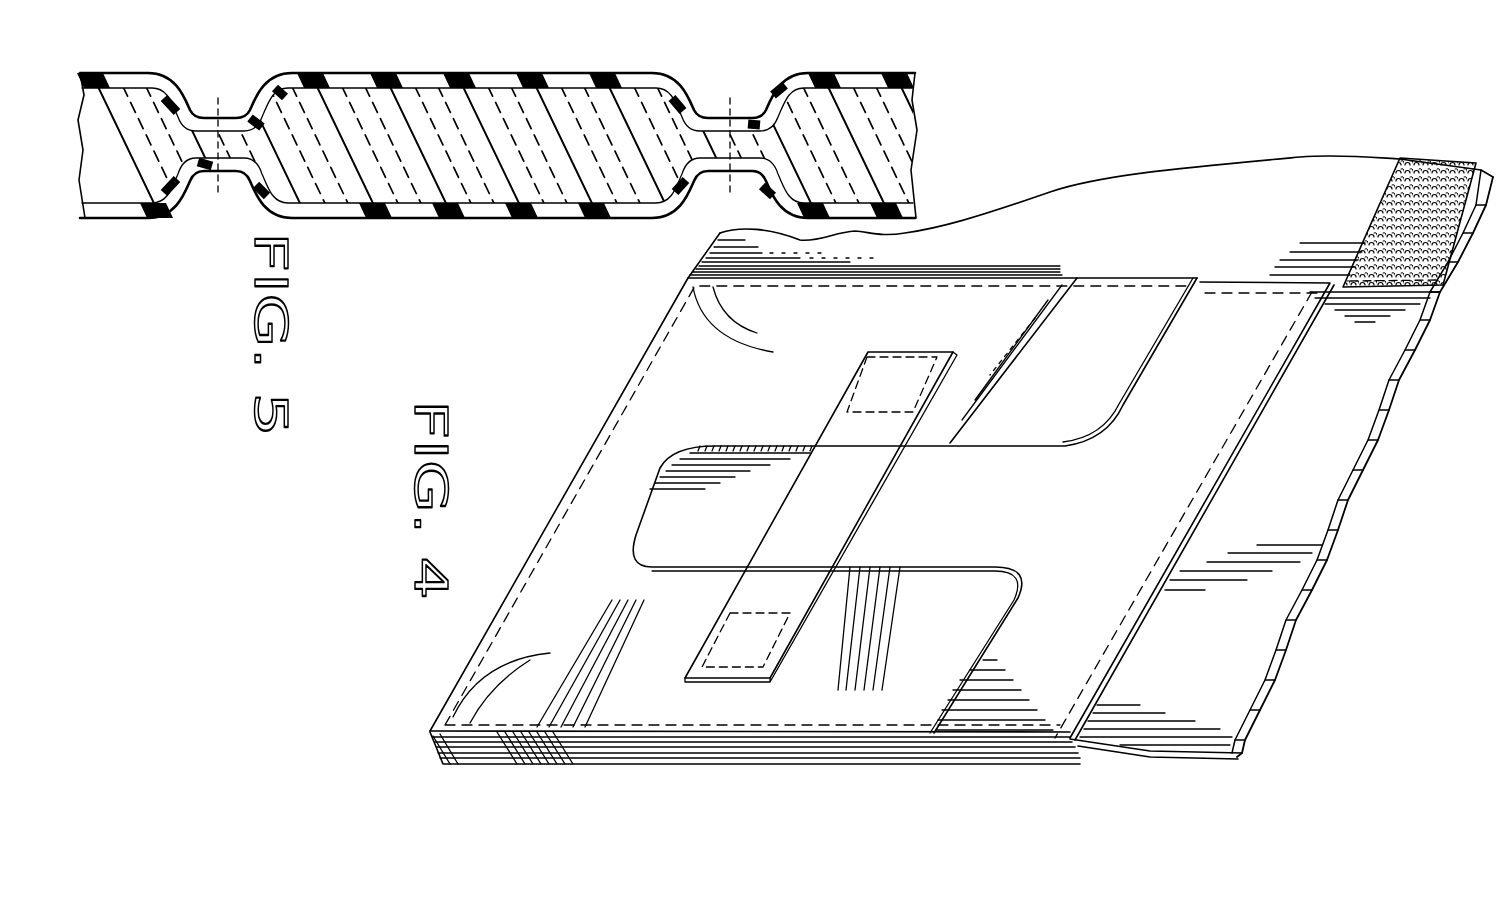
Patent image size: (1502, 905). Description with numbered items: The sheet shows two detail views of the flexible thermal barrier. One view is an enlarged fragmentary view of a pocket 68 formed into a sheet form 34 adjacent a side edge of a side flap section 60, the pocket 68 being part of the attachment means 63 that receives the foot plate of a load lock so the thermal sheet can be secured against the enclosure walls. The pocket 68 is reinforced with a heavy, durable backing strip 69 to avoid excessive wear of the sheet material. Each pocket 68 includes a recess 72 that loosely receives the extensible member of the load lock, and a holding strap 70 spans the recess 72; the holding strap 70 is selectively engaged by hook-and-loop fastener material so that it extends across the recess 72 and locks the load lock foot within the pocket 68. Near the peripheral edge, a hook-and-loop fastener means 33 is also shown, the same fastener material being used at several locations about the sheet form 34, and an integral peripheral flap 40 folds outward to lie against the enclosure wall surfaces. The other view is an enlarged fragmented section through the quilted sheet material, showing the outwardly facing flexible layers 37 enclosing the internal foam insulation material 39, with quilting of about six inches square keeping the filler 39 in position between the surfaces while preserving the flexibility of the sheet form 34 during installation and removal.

In FIG. 4, the fastener means 33 is at (1450, 298).
In FIG. 4, the sheet form 34 is at (1133, 171).
In FIG. 5, the outwardly facing flexible layer 37 is at (690, 105).
In FIG. 4, the outwardly facing flexible layer 37 is at (1383, 368).
In FIG. 5, the internal insulation material 39 is at (583, 185).
In FIG. 4, the peripheral flap 40 is at (1325, 465).
In FIG. 4, the side flap section 60 is at (1170, 705).
In FIG. 4, the attachment means 63 is at (580, 466).
In FIG. 4, the pocket 68 is at (910, 703).
In FIG. 4, the backing strip 69 is at (778, 762).
In FIG. 4, the holding strap 70 is at (850, 443).
In FIG. 4, the recess 72 is at (948, 540).